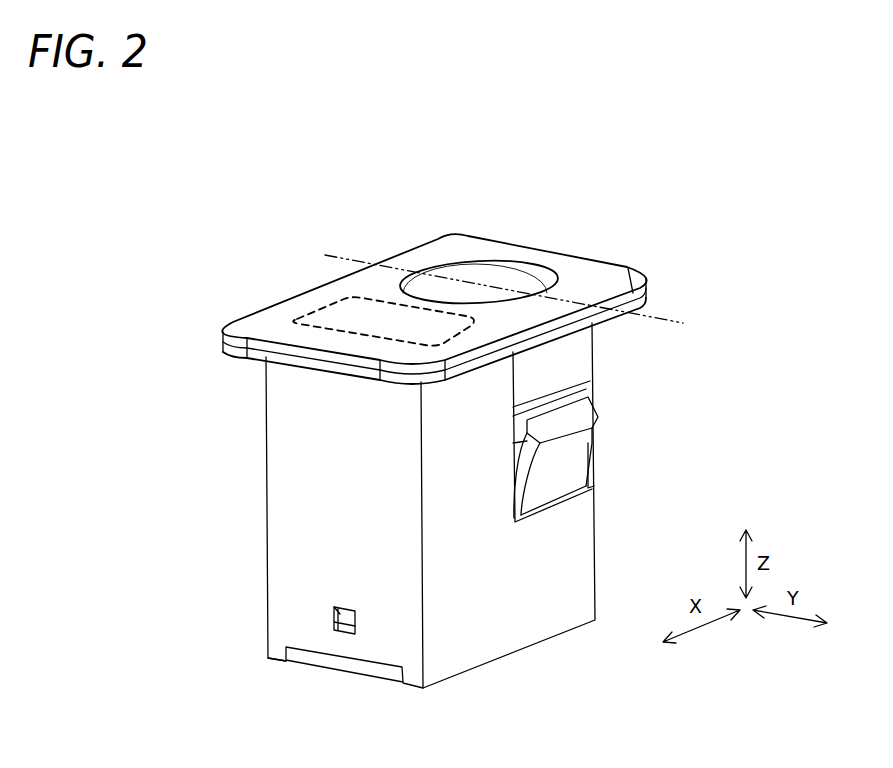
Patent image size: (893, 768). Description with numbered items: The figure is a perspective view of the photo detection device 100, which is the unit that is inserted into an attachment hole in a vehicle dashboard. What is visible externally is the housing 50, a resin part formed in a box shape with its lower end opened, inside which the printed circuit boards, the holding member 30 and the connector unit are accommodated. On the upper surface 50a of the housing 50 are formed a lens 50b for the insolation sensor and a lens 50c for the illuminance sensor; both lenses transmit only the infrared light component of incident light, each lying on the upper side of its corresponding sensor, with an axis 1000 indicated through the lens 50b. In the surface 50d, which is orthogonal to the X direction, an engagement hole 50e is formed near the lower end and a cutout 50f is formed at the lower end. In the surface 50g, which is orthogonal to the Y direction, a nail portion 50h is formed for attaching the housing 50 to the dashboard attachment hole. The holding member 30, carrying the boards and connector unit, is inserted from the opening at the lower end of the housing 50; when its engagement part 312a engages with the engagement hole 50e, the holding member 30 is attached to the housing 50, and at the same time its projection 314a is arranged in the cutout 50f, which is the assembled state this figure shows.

The photo detection device 100 is at (443, 213).
The housing 50 is at (573, 572).
The upper surface 50a is at (588, 277).
The lens 50b is at (518, 273).
The lens 50c is at (337, 313).
The surface 50d is at (292, 487).
The engagement hole 50e is at (333, 610).
The cutout 50f is at (290, 660).
The surface 50g is at (563, 608).
The nail portion 50h is at (573, 457).
The engagement part 312a is at (343, 622).
The projection 314a is at (372, 670).
The holding member 30 is at (344, 696).
The center axis of opening 1000 is at (287, 250).